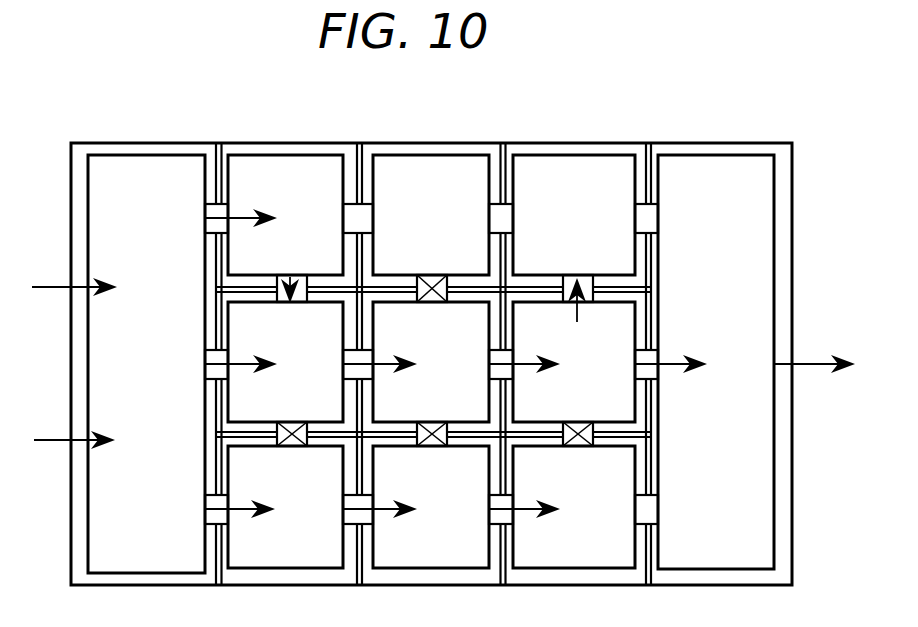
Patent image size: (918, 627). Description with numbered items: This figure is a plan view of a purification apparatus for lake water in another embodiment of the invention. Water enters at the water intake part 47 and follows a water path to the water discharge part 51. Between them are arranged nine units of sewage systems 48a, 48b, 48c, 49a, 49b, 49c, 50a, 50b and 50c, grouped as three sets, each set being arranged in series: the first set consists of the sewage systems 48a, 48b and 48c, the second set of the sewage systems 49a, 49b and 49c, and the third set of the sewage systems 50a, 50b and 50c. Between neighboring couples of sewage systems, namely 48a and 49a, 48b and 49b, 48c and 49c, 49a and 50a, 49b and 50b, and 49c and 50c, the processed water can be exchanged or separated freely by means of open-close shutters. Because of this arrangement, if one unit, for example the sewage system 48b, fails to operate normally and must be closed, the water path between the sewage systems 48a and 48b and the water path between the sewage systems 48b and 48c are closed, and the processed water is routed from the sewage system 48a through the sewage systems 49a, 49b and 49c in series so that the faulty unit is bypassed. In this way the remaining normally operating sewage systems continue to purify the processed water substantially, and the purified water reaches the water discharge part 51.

The water intake part 47 is at (132, 175).
The water discharge part 51 is at (728, 168).
The sewage system 48a is at (285, 215).
The sewage system 48b is at (431, 215).
The sewage system 48c is at (574, 215).
The sewage system 49a is at (285, 362).
The sewage system 49b is at (431, 362).
The sewage system 49c is at (574, 362).
The sewage system 50a is at (285, 507).
The sewage system 50b is at (431, 507).
The sewage system 50c is at (574, 507).